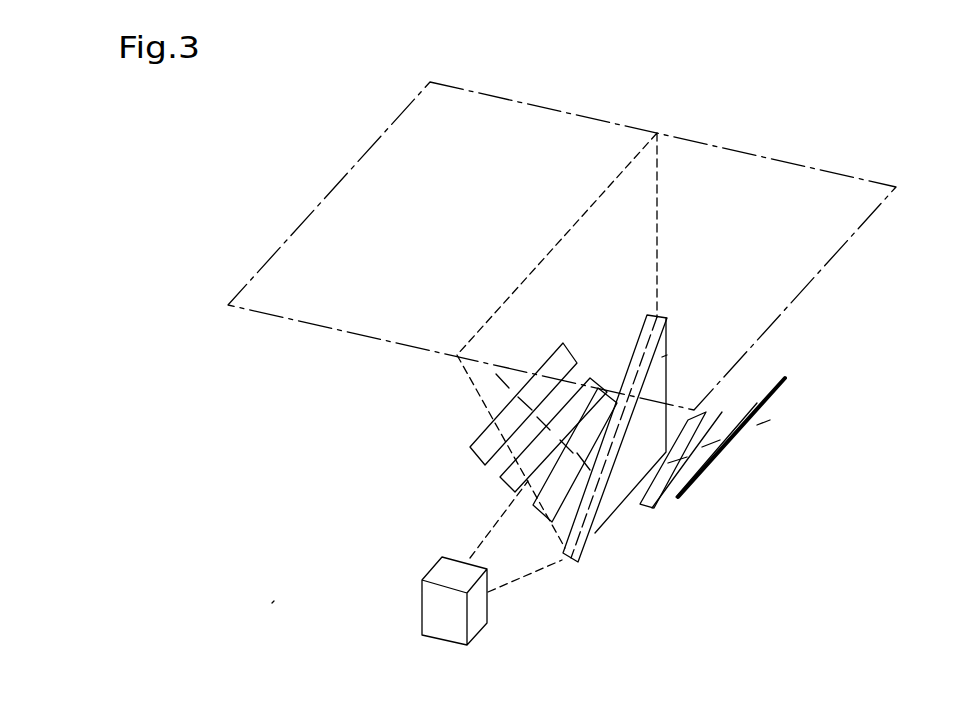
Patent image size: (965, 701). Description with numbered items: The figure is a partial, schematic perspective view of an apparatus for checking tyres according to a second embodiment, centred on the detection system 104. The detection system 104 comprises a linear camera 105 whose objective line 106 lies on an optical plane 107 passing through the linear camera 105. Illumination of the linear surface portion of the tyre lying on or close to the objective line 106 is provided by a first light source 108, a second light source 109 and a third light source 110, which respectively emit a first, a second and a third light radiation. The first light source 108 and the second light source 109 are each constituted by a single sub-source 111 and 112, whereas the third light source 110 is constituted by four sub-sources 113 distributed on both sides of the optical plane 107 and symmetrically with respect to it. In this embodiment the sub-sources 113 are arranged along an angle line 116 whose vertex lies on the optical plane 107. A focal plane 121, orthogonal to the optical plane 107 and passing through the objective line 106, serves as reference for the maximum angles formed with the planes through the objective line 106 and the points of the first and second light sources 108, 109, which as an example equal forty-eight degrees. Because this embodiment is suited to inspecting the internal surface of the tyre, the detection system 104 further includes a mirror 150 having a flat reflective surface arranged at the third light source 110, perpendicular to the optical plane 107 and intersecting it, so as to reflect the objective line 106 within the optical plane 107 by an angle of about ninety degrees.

The detection system 104 is at (275, 603).
The linear camera 105 is at (480, 624).
The objective line 106 is at (615, 178).
The optical plane 107 is at (470, 379).
The first light source 108 is at (456, 453).
The second light source 109 is at (722, 475).
The third light source 110 is at (494, 491).
The sub-source 111 is at (473, 442).
The sub-source 112 is at (772, 385).
The sub-sources 113 is at (577, 477).
The angle line 116 is at (506, 368).
The focal plane 121 is at (752, 153).
The mirror 150 is at (662, 357).